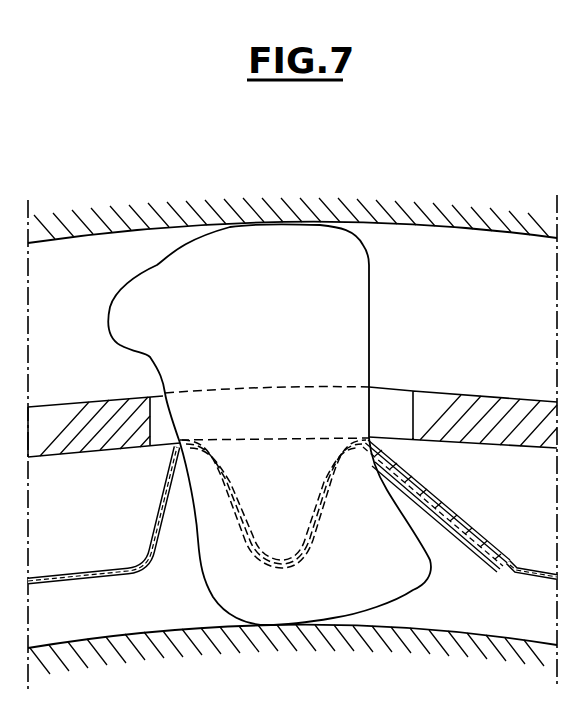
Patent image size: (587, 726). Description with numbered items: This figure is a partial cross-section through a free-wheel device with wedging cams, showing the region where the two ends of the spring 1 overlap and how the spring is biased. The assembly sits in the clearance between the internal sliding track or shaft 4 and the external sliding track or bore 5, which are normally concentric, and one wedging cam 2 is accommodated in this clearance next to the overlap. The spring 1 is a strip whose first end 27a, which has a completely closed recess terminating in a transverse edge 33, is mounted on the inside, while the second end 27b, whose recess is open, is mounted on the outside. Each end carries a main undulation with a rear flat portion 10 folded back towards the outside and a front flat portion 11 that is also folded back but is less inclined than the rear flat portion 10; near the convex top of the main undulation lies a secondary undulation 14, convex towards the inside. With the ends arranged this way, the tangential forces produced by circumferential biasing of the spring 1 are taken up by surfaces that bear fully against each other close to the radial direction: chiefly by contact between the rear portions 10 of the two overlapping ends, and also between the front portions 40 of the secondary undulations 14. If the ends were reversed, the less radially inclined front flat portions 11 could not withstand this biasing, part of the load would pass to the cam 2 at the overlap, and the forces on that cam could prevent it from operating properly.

The spring 1 is at (97, 582).
The wedging cam 2 is at (371, 297).
The internal sliding track or shaft 4 is at (473, 633).
The external sliding track or bore 5 is at (471, 231).
The rear flat portion 10 is at (158, 505).
The front flat portion 11 is at (422, 483).
The secondary undulation 14 is at (303, 568).
The first end of the strip 27a is at (162, 536).
The second end of the strip 27b is at (466, 513).
The transverse edge 33 is at (150, 568).
The front portion of the secondary undulation 40 is at (318, 526).